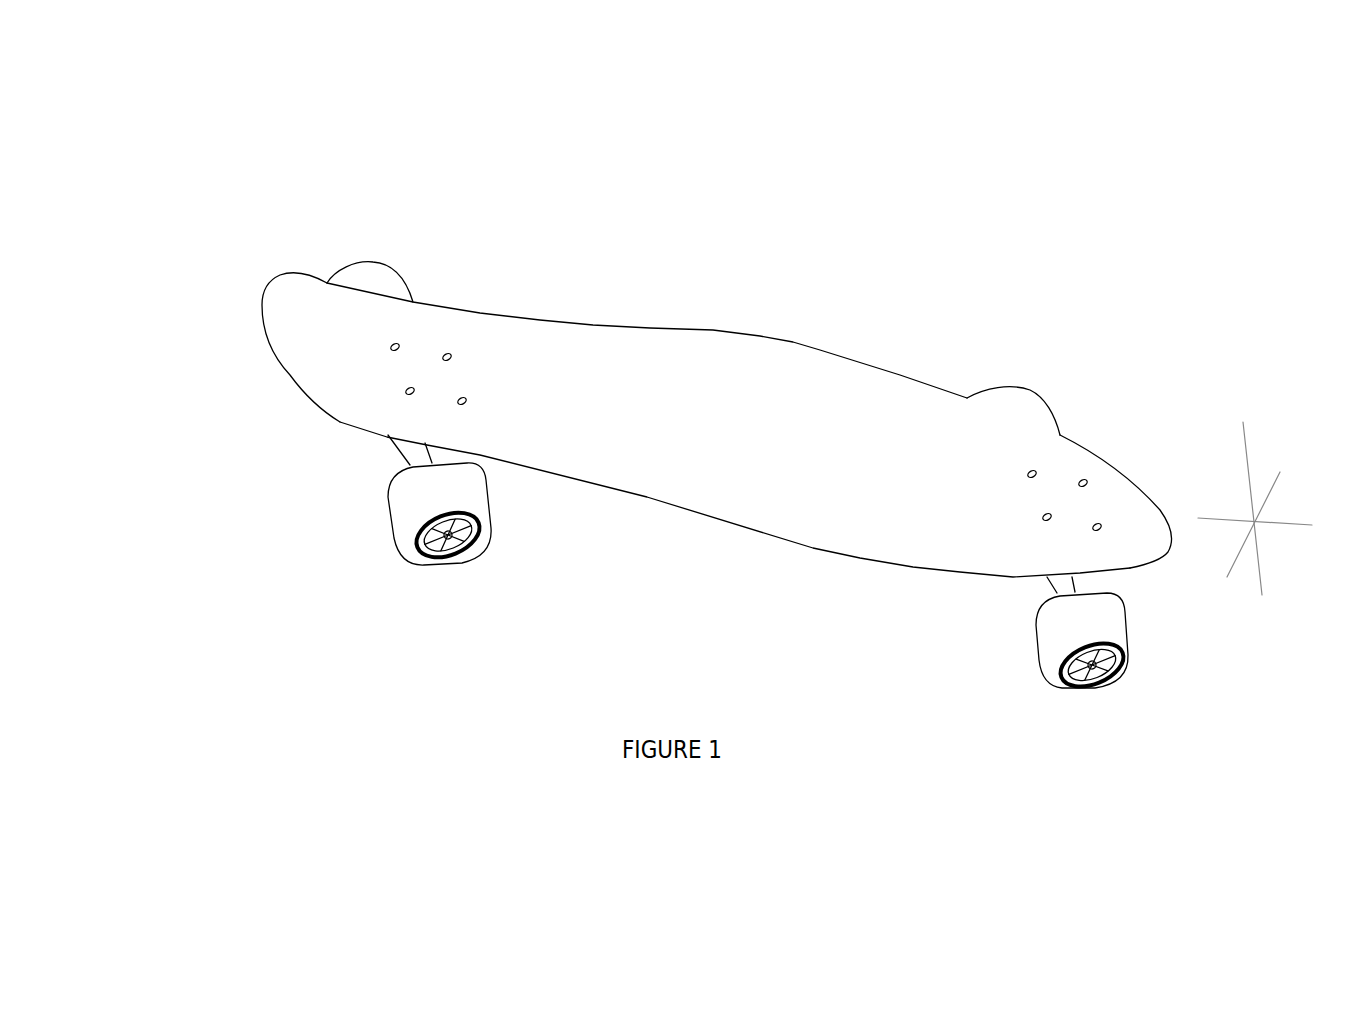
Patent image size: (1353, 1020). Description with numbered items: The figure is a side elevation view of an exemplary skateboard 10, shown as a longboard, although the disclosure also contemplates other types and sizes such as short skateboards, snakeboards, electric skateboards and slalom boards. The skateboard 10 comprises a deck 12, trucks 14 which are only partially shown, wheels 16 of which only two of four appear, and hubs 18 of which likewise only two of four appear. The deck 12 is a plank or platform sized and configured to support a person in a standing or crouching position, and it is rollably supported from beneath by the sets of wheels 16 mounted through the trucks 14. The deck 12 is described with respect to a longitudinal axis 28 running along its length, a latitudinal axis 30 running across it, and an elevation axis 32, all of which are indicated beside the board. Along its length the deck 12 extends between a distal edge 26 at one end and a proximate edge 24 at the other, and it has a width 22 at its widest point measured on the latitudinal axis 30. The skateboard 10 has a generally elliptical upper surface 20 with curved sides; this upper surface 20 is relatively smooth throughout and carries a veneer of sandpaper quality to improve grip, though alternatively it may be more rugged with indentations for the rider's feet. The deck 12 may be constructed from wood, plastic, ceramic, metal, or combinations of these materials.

The skateboard 10 is at (875, 207).
The deck 12 is at (972, 395).
The trucks 14 is at (407, 453).
The wheels 16 is at (400, 518).
The hubs 18 is at (438, 560).
The upper surface 20 is at (592, 325).
The width 22 is at (813, 547).
The proximate edge 24 is at (1172, 540).
The distal edge 26 is at (263, 298).
The longitudinal axis 28 is at (1273, 528).
The latitudinal axis 30 is at (1273, 516).
The elevation axis 32 is at (1251, 491).